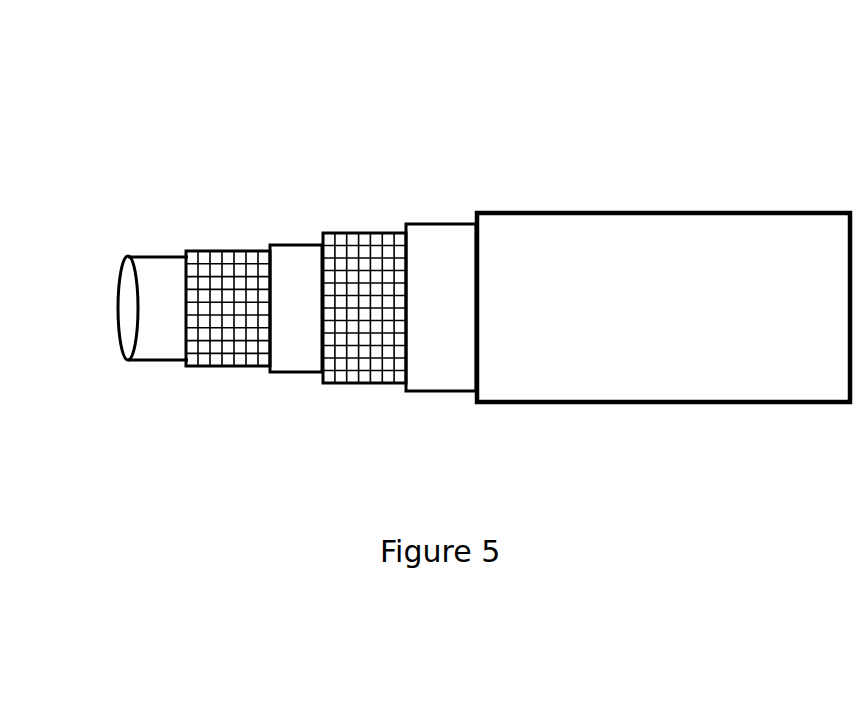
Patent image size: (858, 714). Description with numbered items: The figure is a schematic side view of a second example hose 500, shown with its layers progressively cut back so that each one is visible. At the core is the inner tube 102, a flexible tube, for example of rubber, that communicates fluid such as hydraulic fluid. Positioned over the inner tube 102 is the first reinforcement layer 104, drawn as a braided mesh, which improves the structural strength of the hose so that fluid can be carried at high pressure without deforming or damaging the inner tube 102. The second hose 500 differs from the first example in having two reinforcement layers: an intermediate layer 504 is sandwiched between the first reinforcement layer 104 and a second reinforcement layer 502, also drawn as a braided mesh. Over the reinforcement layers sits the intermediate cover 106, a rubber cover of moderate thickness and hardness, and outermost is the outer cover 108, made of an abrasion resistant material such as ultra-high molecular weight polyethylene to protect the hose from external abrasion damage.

The second hose 500 is at (613, 86).
The inner tube 102 is at (135, 257).
The first reinforcement layer 104 is at (227, 251).
The intermediate layer 504 is at (308, 245).
The second reinforcement layer 502 is at (383, 233).
The intermediate cover 106 is at (452, 224).
The outer cover 108 is at (640, 213).